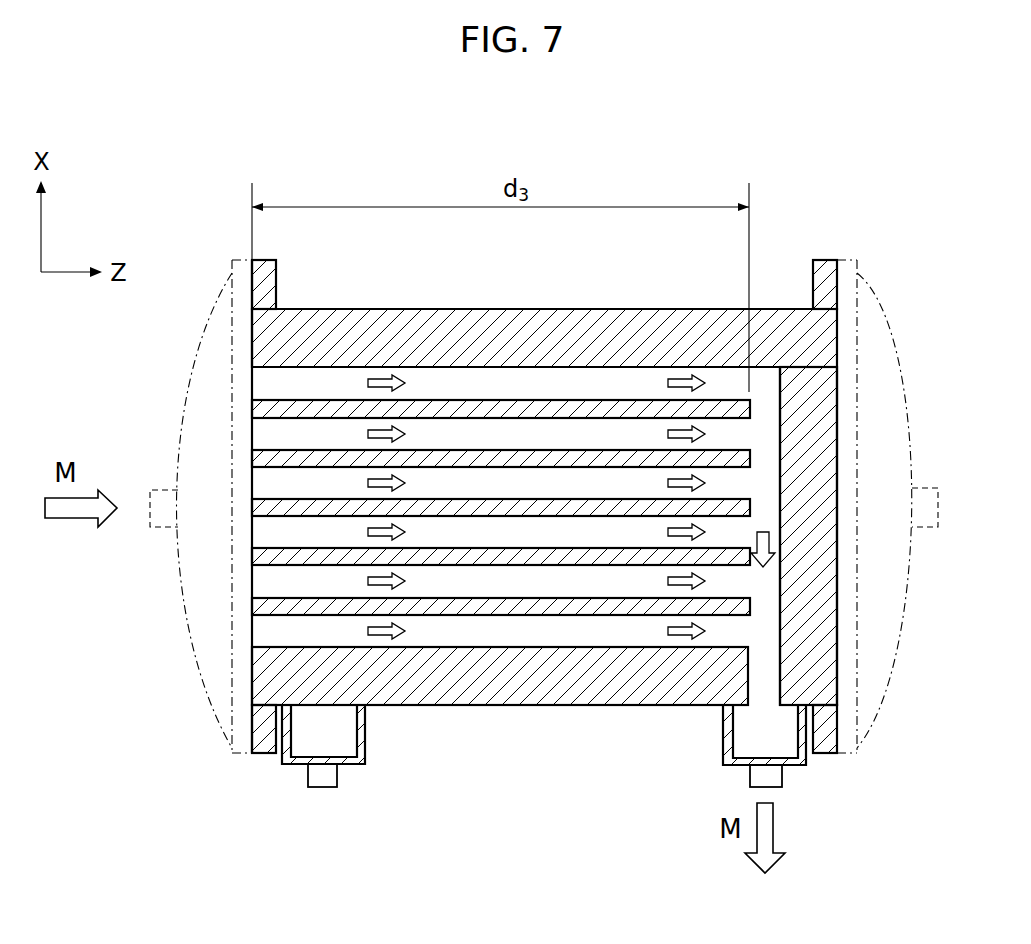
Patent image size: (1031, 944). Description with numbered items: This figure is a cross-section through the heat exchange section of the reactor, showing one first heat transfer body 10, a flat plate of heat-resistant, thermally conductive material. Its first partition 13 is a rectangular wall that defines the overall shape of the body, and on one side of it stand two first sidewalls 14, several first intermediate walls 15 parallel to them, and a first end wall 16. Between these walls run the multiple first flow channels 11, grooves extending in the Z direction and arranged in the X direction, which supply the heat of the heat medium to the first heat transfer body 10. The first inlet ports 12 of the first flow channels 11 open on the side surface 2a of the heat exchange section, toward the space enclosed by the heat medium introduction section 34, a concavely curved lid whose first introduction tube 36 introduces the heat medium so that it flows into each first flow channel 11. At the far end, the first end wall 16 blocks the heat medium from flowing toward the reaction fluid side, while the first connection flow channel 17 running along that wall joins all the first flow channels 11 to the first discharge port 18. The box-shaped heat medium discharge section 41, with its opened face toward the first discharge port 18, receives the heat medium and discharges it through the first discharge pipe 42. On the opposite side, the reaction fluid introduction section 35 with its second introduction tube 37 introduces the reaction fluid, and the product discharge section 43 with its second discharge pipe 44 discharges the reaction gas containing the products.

The first heat transfer body 10 is at (510, 532).
The first flow channels 11 is at (310, 396).
The first inlet ports 12 is at (252, 633).
The first partition 13 is at (501, 445).
The first sidewalls 14 is at (660, 322).
The first intermediate walls 15 is at (578, 402).
The first end wall 16 is at (812, 452).
The first connection flow channel 17 is at (762, 503).
The first discharge port 18 is at (768, 672).
The side surface 2a is at (252, 680).
The heat medium introduction section 34 is at (207, 366).
The reaction fluid introduction section 35 is at (880, 362).
The first introduction tube 36 is at (165, 490).
The second introduction tube 37 is at (928, 488).
The heat medium discharge section 41 is at (723, 740).
The first discharge pipe 42 is at (750, 776).
The product discharge section 43 is at (365, 742).
The second discharge pipe 44 is at (338, 778).